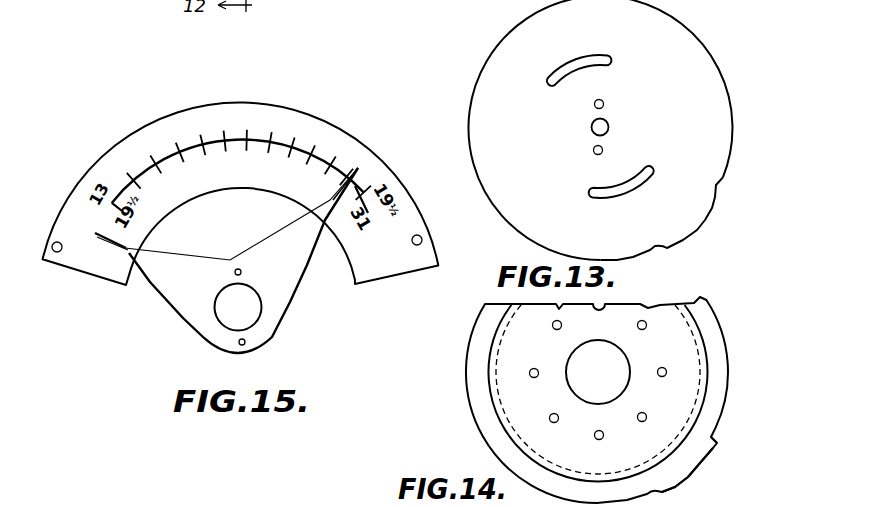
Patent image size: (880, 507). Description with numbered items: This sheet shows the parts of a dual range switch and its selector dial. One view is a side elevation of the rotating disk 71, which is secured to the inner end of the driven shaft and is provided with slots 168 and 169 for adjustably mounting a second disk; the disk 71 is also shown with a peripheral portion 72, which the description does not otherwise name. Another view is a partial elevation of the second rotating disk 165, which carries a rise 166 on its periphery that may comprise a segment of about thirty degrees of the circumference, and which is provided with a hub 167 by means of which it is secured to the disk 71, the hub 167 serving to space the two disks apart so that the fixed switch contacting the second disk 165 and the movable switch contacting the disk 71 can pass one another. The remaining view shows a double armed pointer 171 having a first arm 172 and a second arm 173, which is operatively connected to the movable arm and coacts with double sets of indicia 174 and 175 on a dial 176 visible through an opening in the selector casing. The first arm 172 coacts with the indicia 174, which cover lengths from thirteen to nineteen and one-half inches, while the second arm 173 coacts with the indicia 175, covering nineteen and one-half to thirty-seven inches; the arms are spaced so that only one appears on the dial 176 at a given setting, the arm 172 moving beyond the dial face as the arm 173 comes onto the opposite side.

In FIG. 13, the rotating disk 71 is at (699, 47).
In FIG. 13, the disc plate lobe 72 is at (699, 217).
In FIG. 13, the slot 168 is at (577, 64).
In FIG. 13, the slot 169 is at (637, 169).
In FIG. 14, the second rotating disk 165 is at (723, 333).
In FIG. 14, the rise 166 is at (699, 461).
In FIG. 14, the hub 167 is at (699, 376).
In FIG. 15, the double armed pointer 171 is at (278, 324).
In FIG. 15, the first arm 172 is at (362, 164).
In FIG. 15, the second arm 173 is at (98, 234).
In FIG. 15, the indicia 174 is at (185, 143).
In FIG. 15, the indicia 175 is at (216, 155).
In FIG. 15, the dial 176 is at (297, 114).